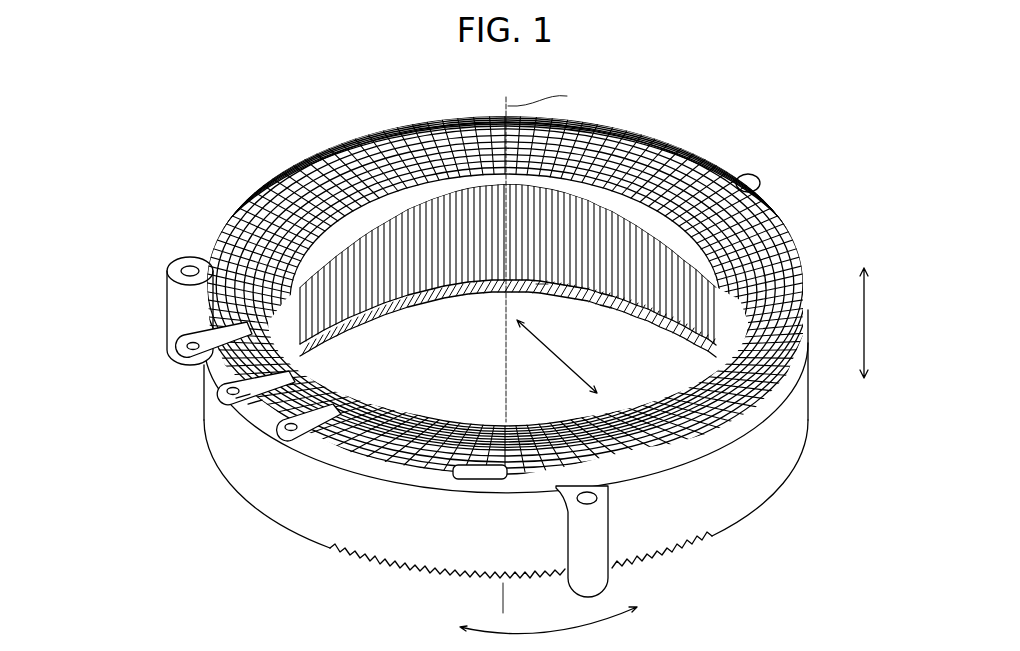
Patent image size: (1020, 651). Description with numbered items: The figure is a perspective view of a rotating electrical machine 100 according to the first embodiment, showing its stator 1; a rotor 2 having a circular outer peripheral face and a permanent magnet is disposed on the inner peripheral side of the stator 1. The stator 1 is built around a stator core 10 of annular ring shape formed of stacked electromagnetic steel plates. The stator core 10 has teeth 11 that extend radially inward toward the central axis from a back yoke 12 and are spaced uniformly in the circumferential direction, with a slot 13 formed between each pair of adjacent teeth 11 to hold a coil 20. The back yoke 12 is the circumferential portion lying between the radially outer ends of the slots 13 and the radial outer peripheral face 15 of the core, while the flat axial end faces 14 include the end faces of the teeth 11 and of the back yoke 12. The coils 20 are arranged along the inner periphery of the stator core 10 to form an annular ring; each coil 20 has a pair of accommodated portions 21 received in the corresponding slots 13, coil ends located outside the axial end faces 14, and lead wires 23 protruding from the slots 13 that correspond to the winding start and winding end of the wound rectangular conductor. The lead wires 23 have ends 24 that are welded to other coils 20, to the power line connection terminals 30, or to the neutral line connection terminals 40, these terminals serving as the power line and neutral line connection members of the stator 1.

The rotating electrical machine 100 is at (144, 142).
The stator 1 is at (144, 249).
The rotor 2 is at (345, 145).
The stator core 10 is at (209, 459).
The teeth 11 is at (432, 296).
The back yoke 12 is at (740, 485).
The slot 13 is at (448, 292).
The axial end faces 14 is at (762, 387).
The radial outer peripheral face 15 is at (771, 456).
The coils 20 is at (265, 175).
The accommodated portions 21 is at (540, 283).
The lead wires 23 is at (267, 190).
The ends 24 is at (240, 210).
The power line connection terminals 30 is at (178, 350).
The neutral line connection terminals 40 is at (249, 407).